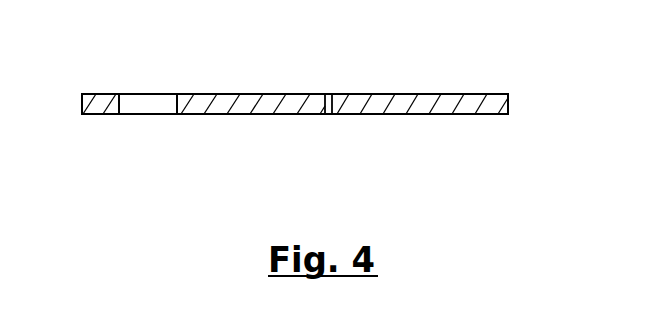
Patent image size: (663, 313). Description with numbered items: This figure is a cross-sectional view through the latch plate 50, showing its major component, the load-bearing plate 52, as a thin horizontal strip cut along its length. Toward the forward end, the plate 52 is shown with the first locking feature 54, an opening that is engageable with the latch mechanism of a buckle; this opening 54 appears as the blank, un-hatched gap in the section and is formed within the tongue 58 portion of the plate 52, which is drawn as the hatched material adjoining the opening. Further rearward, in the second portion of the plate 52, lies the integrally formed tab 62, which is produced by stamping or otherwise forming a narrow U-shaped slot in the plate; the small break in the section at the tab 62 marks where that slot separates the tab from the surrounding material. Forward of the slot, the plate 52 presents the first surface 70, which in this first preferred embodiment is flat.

The latch plate 50 is at (457, 78).
The load-bearing plate 52 is at (444, 102).
The first locking feature 54 is at (142, 106).
The tongue 58 is at (198, 106).
The tab 62 is at (361, 100).
The first surface 70 is at (298, 94).